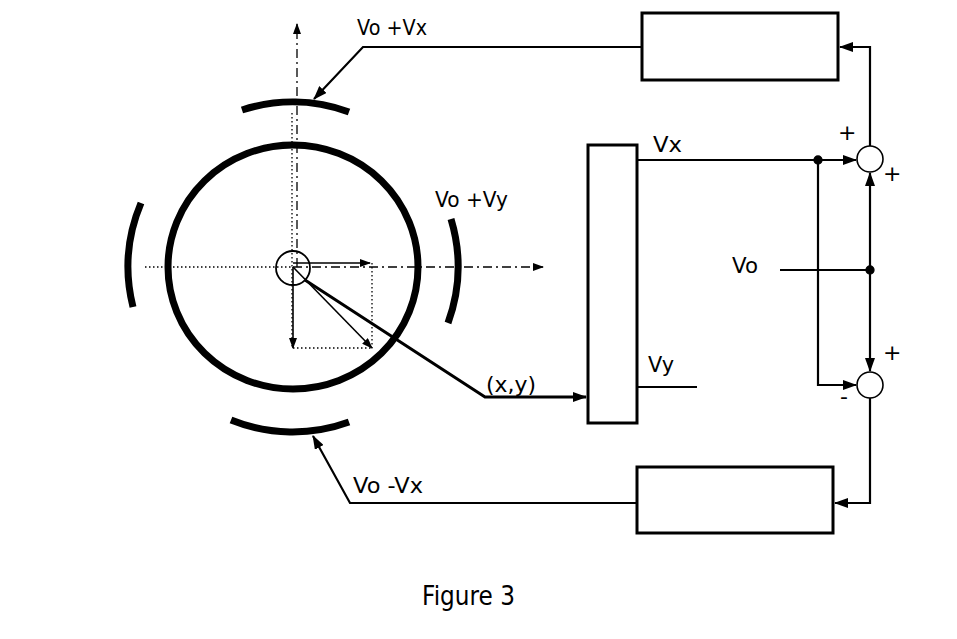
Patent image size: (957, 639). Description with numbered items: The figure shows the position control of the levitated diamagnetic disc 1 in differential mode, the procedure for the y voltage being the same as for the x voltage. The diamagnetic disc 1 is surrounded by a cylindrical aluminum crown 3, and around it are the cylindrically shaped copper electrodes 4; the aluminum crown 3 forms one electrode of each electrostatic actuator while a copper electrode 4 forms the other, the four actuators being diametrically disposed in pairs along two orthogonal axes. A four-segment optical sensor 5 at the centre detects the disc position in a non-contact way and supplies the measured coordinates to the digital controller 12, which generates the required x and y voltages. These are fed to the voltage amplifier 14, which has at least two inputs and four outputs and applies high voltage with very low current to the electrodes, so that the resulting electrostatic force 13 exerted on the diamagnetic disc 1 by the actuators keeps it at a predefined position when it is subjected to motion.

The diamagnetic disc 1 is at (248, 212).
The aluminum crown 3 is at (188, 193).
The copper electrode 4 is at (132, 220).
The optical sensor 5 is at (302, 250).
The digital controller 12 is at (612, 284).
The electrostatic force 13 is at (320, 315).
The voltage amplifier 14 is at (753, 273).